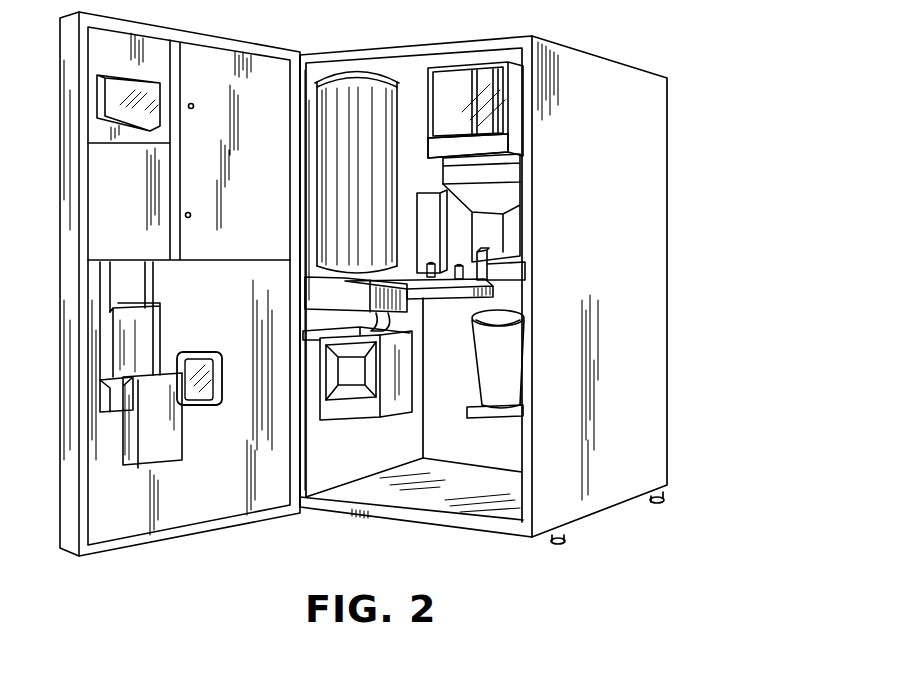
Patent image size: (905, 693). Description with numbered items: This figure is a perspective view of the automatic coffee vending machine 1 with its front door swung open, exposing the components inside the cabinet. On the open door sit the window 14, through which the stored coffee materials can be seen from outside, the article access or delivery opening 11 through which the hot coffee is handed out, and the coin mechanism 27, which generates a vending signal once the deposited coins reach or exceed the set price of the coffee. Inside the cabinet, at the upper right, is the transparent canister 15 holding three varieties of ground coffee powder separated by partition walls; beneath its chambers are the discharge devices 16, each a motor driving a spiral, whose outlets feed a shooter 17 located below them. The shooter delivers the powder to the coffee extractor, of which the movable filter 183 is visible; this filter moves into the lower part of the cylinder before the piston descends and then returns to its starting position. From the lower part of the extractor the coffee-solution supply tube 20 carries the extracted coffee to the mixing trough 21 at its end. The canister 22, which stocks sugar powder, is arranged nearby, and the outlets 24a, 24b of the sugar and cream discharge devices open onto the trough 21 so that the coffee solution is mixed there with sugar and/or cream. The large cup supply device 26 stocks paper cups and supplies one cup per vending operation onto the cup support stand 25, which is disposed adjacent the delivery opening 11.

The vending machine 1 is at (464, 32).
The article access or delivery opening 11 is at (206, 392).
The window 14 is at (110, 97).
The canister 15 is at (517, 107).
The discharge devices 16 is at (503, 143).
The shooter 17 is at (510, 193).
The movable filter 183 is at (507, 263).
The coffee-solution supply tube 20 is at (378, 324).
The mixing trough 21 is at (437, 292).
The canister 22 is at (433, 205).
The outlet 24a is at (431, 263).
The outlet 24b is at (457, 281).
The cup support stand 25 is at (390, 400).
The cup supply device 26 is at (352, 72).
The coin mechanism 27 is at (108, 340).